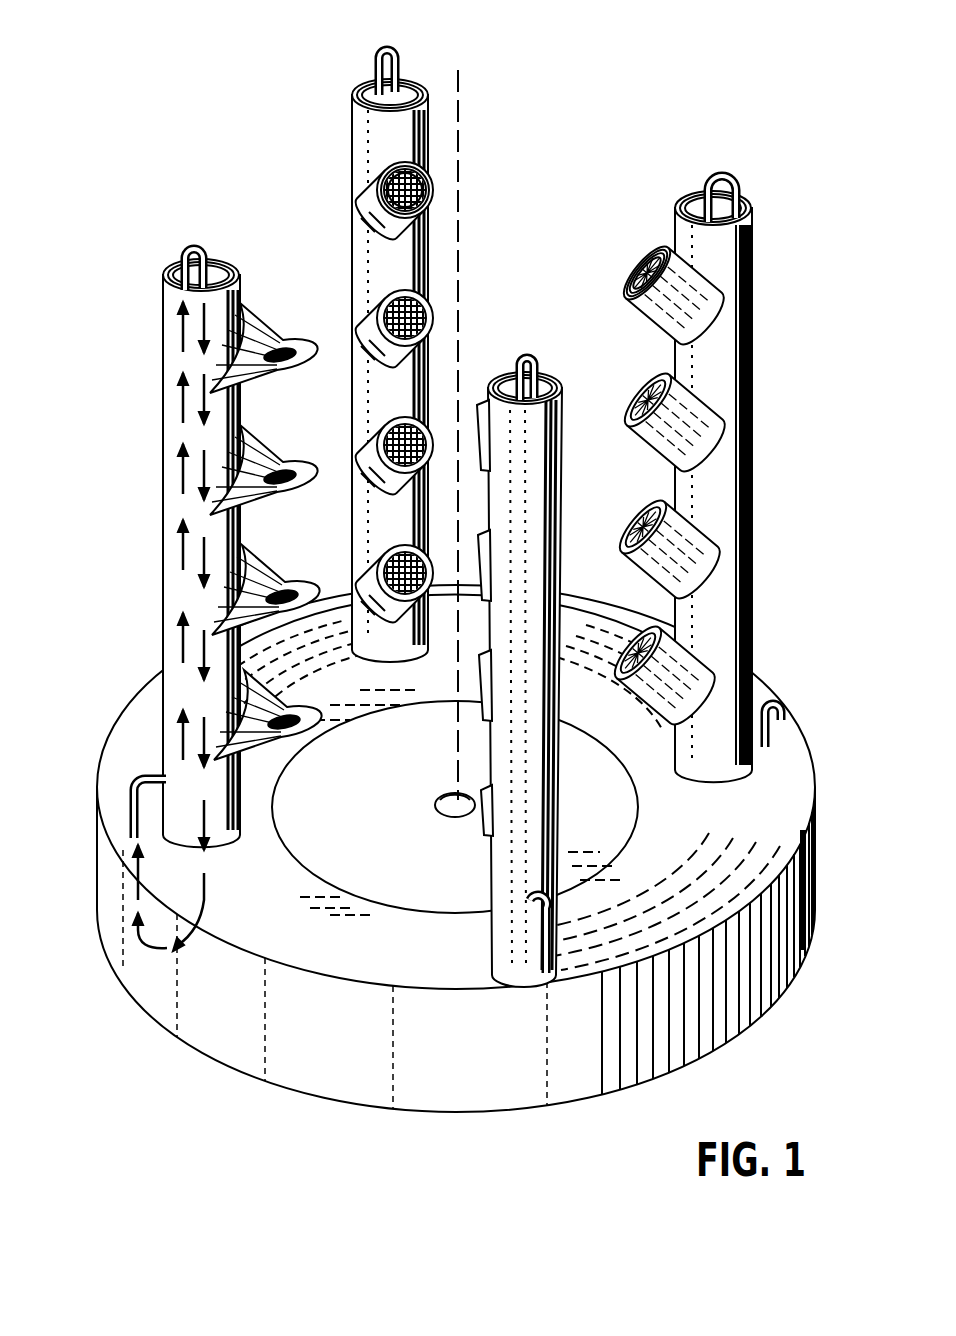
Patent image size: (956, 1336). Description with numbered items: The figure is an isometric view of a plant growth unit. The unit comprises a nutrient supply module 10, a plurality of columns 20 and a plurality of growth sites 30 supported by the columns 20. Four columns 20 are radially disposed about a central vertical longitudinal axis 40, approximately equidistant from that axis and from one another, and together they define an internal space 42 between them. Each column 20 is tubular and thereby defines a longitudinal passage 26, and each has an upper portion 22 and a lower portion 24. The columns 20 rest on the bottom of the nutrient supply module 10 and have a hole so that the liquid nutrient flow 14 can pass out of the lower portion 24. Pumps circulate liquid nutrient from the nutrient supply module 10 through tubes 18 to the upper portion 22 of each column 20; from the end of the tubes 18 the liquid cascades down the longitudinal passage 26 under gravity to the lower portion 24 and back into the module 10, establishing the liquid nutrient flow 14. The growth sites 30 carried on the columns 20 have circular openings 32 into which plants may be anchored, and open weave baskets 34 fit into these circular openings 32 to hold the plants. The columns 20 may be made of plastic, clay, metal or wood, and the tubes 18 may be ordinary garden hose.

The nutrient supply module 10 is at (227, 1037).
The liquid nutrient flow 14 is at (166, 953).
The tubes 18 is at (372, 62).
The columns 20 is at (349, 225).
The upper portion 22 is at (148, 283).
The lower portion 24 is at (247, 770).
The longitudinal passage 26 is at (402, 88).
The growth sites 30 is at (383, 175).
The circular openings 32 is at (430, 188).
The baskets 34 is at (428, 206).
The central vertical longitudinal axis 40 is at (465, 121).
The internal space 42 is at (500, 280).